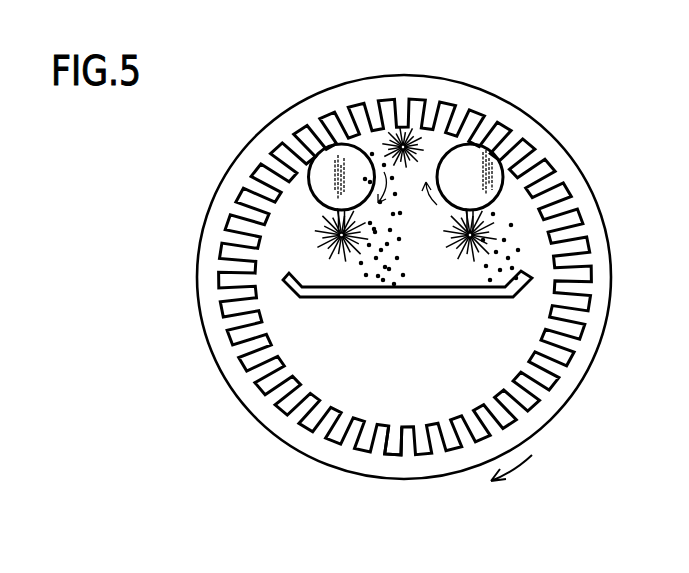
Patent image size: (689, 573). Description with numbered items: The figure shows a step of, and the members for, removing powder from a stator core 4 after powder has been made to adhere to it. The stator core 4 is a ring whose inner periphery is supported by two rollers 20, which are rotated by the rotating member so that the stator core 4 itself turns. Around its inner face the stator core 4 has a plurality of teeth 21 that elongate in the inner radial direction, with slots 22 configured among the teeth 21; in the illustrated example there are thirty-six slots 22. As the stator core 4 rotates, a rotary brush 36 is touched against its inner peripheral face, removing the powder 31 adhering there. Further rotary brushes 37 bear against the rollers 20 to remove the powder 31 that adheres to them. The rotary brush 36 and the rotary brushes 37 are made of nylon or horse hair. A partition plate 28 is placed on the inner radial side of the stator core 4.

The stator core 4 is at (452, 93).
The rollers 20 is at (330, 175).
The teeth 21 is at (443, 447).
The slots 22 is at (398, 449).
The partition plate 28 is at (288, 281).
The powder 31 is at (360, 268).
The rotary brush 36 is at (405, 128).
The rotary brushes 37 is at (323, 224).